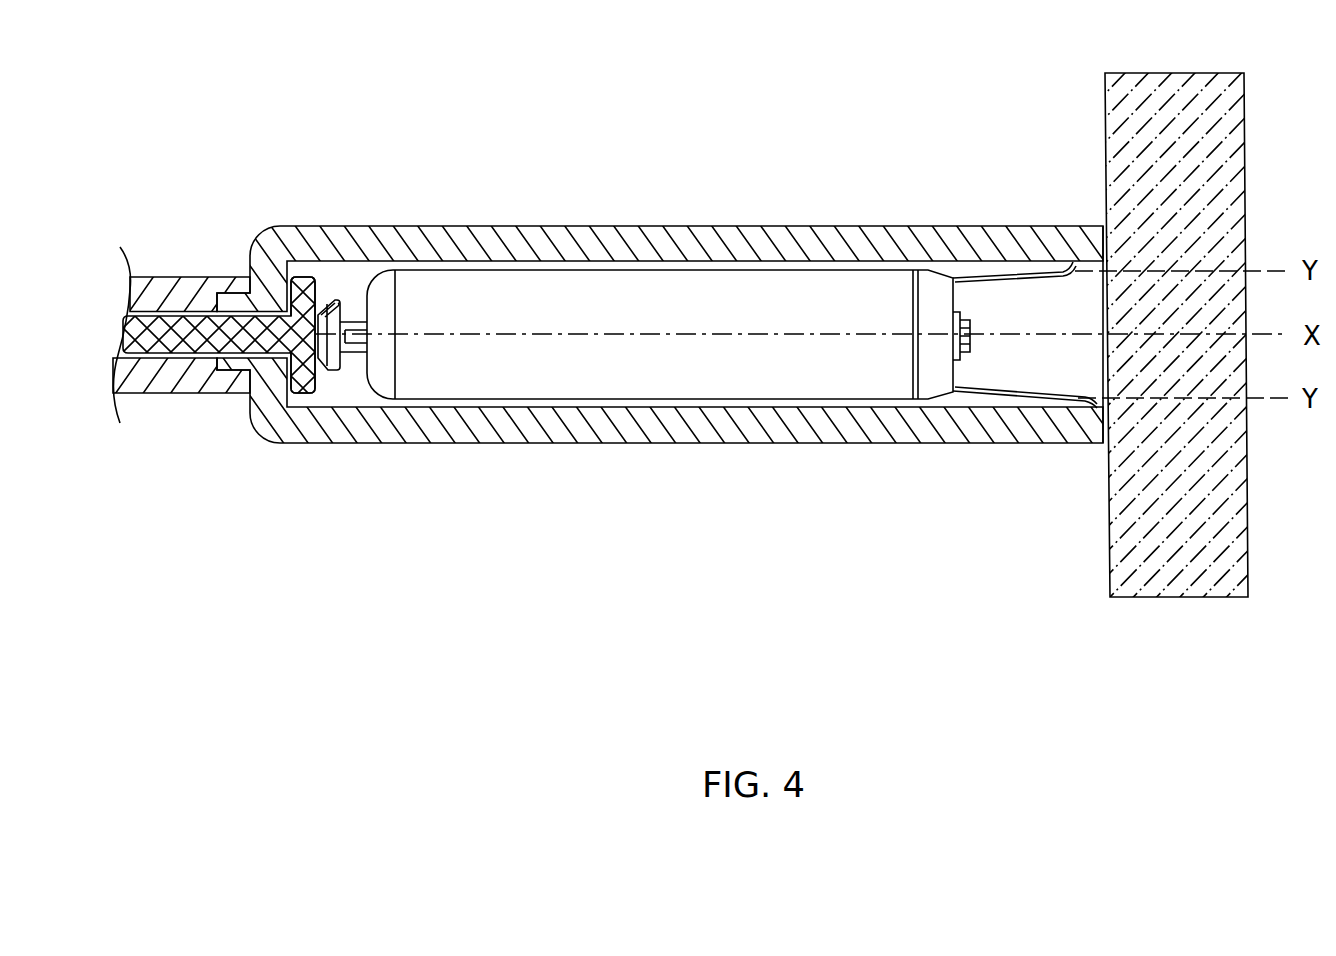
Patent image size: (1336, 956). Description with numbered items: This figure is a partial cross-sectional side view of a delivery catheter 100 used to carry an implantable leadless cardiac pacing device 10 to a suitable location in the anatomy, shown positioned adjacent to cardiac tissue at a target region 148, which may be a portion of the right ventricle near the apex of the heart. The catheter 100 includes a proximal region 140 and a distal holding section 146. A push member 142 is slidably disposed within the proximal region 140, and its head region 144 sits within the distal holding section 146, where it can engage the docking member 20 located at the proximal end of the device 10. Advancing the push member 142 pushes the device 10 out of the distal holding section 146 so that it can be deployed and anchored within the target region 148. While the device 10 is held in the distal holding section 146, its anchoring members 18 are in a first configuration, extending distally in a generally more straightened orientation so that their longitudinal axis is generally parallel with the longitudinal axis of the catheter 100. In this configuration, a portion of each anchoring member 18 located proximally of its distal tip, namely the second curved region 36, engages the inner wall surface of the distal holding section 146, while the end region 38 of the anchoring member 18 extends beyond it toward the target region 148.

The delivery catheter 100 is at (639, 329).
The implantable leadless cardiac pacing device 10 is at (682, 336).
The anchoring members 18 is at (978, 272).
The docking member 20 is at (332, 381).
The second curved region 36 is at (1083, 260).
The end region 38 is at (1105, 257).
The proximal region 140 is at (167, 388).
The push member 142 is at (195, 327).
The head region 144 is at (302, 388).
The distal holding section 146 is at (612, 432).
The target region 148 is at (1178, 585).